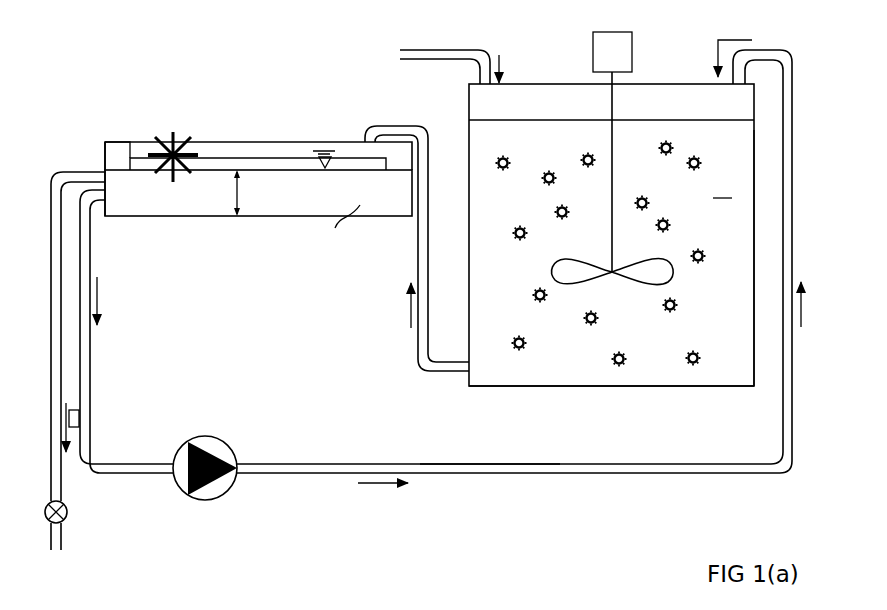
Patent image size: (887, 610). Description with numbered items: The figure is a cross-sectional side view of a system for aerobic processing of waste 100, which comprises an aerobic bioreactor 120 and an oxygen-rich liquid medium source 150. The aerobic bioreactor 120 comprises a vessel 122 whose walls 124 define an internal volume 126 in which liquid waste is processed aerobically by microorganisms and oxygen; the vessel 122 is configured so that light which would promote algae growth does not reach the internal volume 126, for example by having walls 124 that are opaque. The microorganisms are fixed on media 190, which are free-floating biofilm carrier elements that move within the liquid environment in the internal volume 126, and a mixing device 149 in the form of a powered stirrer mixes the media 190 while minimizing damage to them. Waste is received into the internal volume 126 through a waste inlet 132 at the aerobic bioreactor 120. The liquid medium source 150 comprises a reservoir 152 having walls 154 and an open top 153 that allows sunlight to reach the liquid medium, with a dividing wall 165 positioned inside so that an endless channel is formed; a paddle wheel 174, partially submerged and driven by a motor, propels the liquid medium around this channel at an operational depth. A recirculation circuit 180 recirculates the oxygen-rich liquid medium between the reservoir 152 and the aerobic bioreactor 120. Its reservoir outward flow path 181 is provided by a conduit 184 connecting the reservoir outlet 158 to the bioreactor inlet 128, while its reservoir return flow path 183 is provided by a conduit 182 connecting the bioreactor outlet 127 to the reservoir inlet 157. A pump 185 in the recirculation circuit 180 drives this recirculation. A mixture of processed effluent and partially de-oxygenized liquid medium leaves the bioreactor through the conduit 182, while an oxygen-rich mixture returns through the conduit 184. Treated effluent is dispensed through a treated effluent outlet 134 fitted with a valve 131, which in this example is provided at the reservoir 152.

The system for aerobic processing of waste 100 is at (363, 73).
The aerobic bioreactor 120 is at (753, 172).
The vessel 122 is at (743, 358).
The walls 124 is at (753, 300).
The internal volume 126 is at (648, 378).
The bioreactor outlet 127 is at (437, 373).
The bioreactor inlet 128 is at (745, 50).
The valve 131 is at (66, 515).
The waste inlet 132 is at (492, 78).
The treated effluent outlet 134 is at (60, 548).
The mixing device 149 is at (612, 125).
The oxygen-rich liquid medium source 150 is at (303, 141).
The reservoir 152 is at (135, 148).
The open top 153 is at (218, 142).
The walls 154 is at (105, 160).
The reservoir inlet 157 is at (352, 141).
The reservoir outlet 158 is at (97, 200).
The dividing wall 165 is at (250, 155).
The paddle wheel 174 is at (173, 133).
The recirculation circuit 180 is at (568, 490).
The reservoir outward flow path 181 is at (372, 483).
The conduit 182 is at (418, 240).
The reservoir return flow path 183 is at (410, 315).
The conduit 184 is at (415, 464).
The pump 185 is at (218, 497).
The media 190 is at (670, 225).